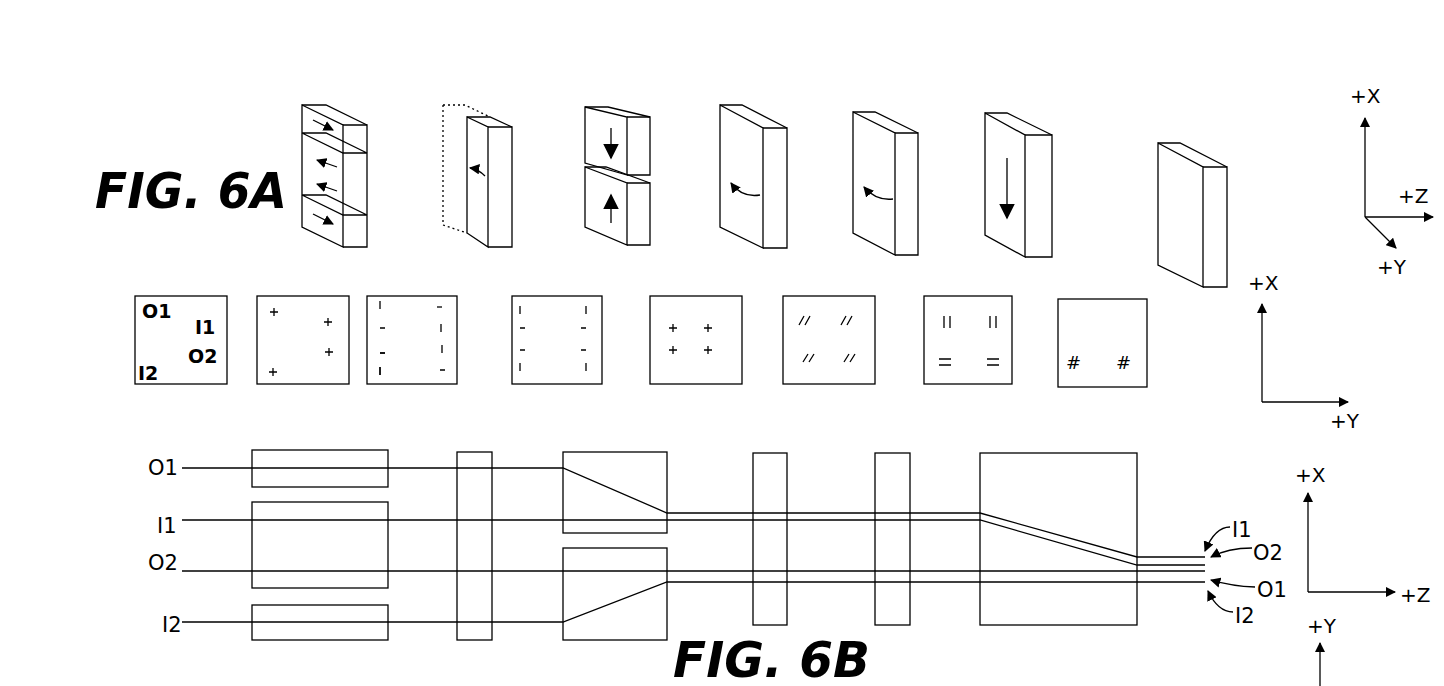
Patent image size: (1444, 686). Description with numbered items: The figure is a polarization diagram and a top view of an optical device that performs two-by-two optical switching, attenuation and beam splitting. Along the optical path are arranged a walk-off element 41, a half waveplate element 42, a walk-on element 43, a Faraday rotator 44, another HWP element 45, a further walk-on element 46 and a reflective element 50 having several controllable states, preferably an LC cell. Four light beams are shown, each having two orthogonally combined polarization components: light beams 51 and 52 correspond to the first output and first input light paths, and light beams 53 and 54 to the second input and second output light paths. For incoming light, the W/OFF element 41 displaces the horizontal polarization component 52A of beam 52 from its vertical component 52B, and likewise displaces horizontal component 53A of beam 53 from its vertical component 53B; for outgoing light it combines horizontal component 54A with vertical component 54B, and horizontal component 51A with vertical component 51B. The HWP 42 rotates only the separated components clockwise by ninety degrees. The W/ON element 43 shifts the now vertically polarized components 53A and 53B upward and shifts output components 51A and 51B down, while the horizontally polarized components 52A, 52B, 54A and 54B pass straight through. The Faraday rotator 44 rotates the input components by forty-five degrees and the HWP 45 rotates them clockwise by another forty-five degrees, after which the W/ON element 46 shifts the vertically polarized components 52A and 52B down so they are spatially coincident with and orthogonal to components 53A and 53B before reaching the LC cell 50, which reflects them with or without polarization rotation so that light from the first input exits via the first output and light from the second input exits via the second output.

In FIG. 6A, the walk-off (W/OFF) element 41 is at (368, 183).
In FIG. 6B, the walk-off (W/OFF) element 41 is at (252, 450).
In FIG. 6A, the half waveplate (HWP) element 42 is at (498, 188).
In FIG. 6B, the half waveplate (HWP) element 42 is at (493, 498).
In FIG. 6A, the walk-on (W/ON) element 43 is at (652, 192).
In FIG. 6B, the walk-on (W/ON) element 43 is at (667, 470).
In FIG. 6A, the Faraday rotator 44 is at (777, 212).
In FIG. 6B, the Faraday rotator 44 is at (788, 483).
In FIG. 6A, the HWP element 45 is at (910, 212).
In FIG. 6B, the HWP element 45 is at (912, 483).
In FIG. 6A, the walk-on (W/ON) element 46 is at (1040, 210).
In FIG. 6B, the walk-on (W/ON) element 46 is at (1138, 470).
In FIG. 6A, the reflective element 50 is at (1217, 210).
In FIG. 6A, the light beam 51 is at (274, 297).
In FIG. 6A, the light beam 52 is at (328, 304).
In FIG. 6A, the light beam 53 is at (278, 381).
In FIG. 6A, the light beam 54 is at (328, 361).
In FIG. 6A, the horizontal polarization component 51A is at (442, 301).
In FIG. 6B, the horizontal polarization component 51A is at (1152, 685).
In FIG. 6A, the vertical polarization component 51B is at (373, 299).
In FIG. 6A, the horizontal polarization component 52A is at (385, 321).
In FIG. 6B, the horizontal polarization component 52A is at (1236, 682).
In FIG. 6A, the vertical polarization component 52B is at (448, 319).
In FIG. 6B, the vertical polarization component 52B is at (206, 681).
In FIG. 6A, the horizontal polarization component 53A is at (444, 374).
In FIG. 6A, the vertical polarization component 53B is at (373, 374).
In FIG. 6A, the horizontal polarization component 54A is at (390, 356).
In FIG. 6A, the vertical polarization component 54B is at (448, 350).